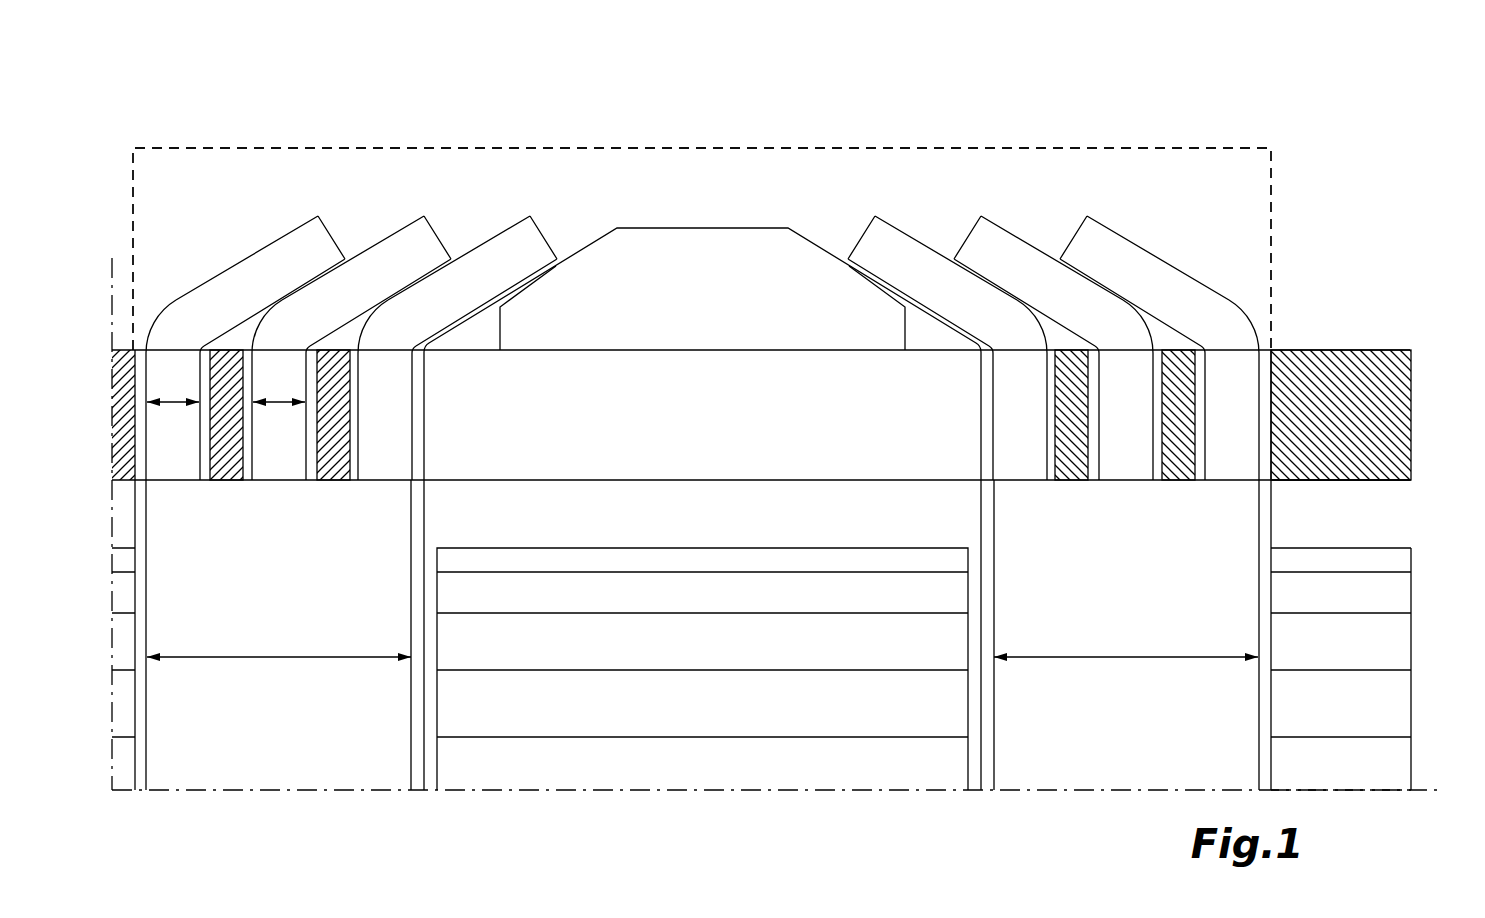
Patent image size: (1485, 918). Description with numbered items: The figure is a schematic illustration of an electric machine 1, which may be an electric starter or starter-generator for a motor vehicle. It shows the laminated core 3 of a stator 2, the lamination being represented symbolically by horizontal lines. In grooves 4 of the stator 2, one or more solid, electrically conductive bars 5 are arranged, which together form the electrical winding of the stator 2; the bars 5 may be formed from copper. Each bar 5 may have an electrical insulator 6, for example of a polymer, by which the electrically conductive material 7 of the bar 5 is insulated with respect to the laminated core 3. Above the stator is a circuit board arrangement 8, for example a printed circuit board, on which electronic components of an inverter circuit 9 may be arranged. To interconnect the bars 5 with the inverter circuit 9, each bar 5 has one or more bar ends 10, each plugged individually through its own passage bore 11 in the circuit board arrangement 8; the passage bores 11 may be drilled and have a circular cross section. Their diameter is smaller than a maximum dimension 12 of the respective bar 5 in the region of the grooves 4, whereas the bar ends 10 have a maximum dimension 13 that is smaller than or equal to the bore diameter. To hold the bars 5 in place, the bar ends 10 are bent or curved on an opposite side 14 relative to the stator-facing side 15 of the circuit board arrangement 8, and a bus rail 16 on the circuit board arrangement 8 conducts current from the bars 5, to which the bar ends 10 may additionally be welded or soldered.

The electric machine 1 is at (268, 118).
The stator 2 is at (1411, 650).
The laminated core 3 is at (1363, 763).
The grooves 4 is at (425, 530).
The bars 5 is at (305, 763).
The electrical insulator 6 is at (146, 635).
The electrically conductive material 7 is at (272, 579).
The circuit board arrangement 8 is at (1293, 363).
The inverter circuit 9 is at (956, 148).
The bar ends 10 is at (334, 237).
The passage bores 11 is at (143, 342).
The maximum dimension 12 is at (285, 657).
The maximum dimension 13 is at (172, 405).
The opposite side 14 is at (1353, 349).
The stator-facing side 15 is at (1363, 483).
The bus rail 16 is at (700, 242).